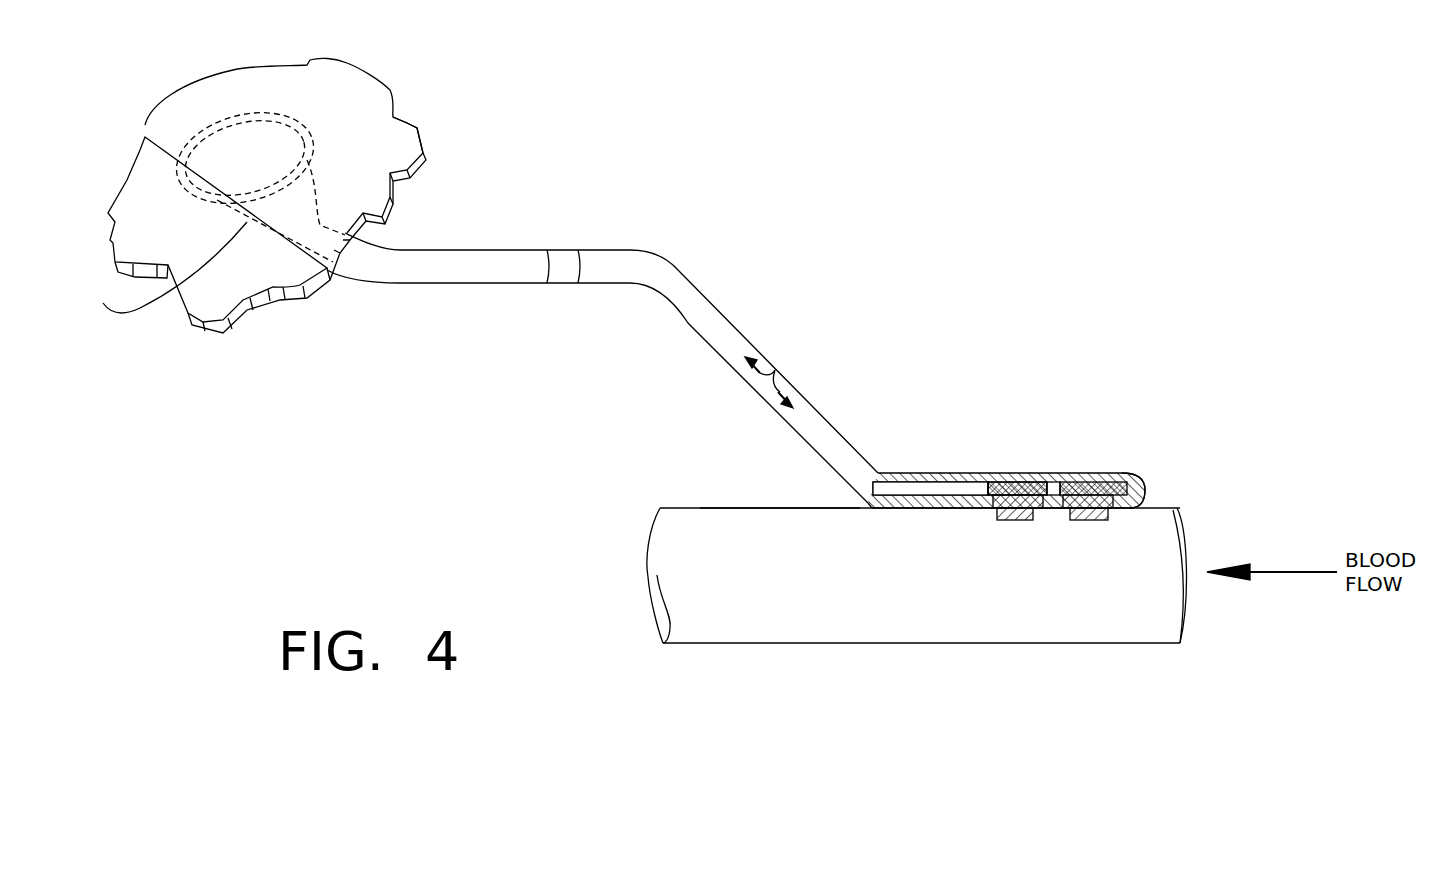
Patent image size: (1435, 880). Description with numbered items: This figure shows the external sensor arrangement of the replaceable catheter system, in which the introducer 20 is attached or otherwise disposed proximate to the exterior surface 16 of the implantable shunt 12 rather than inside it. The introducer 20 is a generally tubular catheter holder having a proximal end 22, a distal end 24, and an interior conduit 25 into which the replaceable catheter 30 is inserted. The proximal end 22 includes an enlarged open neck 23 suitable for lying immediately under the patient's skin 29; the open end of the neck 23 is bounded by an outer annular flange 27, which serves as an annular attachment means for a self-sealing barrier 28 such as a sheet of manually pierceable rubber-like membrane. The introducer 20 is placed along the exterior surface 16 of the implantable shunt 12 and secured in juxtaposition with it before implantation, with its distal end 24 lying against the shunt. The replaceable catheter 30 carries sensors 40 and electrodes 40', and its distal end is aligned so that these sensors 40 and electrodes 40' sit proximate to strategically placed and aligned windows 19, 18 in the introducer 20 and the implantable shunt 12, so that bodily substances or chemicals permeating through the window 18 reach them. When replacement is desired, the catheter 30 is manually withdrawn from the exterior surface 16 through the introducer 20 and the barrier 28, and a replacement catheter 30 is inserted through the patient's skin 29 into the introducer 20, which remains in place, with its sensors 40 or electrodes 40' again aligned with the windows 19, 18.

The implantable shunt 12 is at (803, 633).
The exterior surface 16 is at (737, 505).
The window 18 is at (1018, 520).
The window 19 is at (983, 498).
The introducer 20 is at (817, 408).
The proximal end 22 is at (233, 142).
The enlarged open neck 23 is at (211, 236).
The distal end 24 is at (1145, 493).
The interior conduit 25 is at (770, 372).
The outer annular flange 27 is at (307, 127).
The self-sealing barrier 28 is at (203, 173).
The patient's skin 29 is at (412, 143).
The replaceable catheter 30 is at (457, 250).
The sensor 40 is at (1061, 457).
The electrode 40' is at (1026, 452).